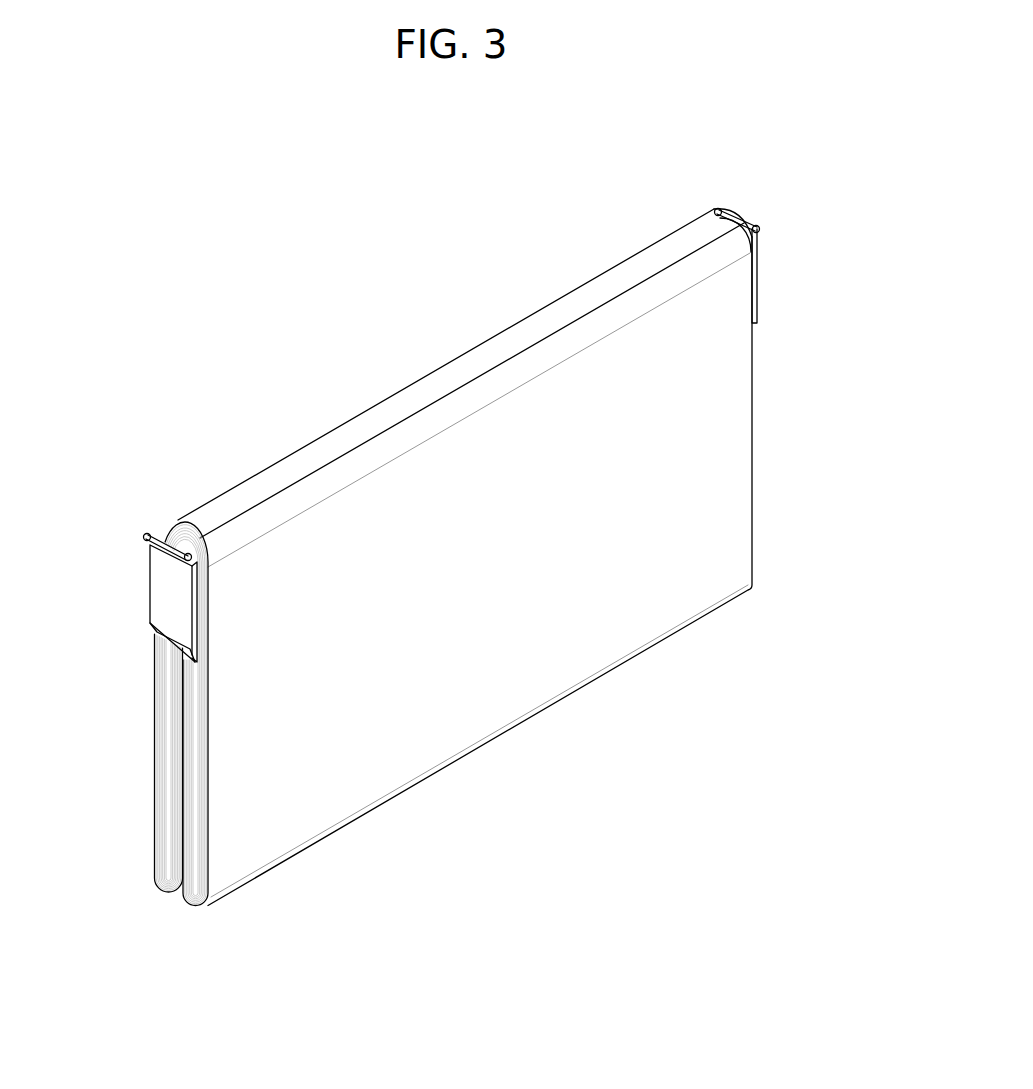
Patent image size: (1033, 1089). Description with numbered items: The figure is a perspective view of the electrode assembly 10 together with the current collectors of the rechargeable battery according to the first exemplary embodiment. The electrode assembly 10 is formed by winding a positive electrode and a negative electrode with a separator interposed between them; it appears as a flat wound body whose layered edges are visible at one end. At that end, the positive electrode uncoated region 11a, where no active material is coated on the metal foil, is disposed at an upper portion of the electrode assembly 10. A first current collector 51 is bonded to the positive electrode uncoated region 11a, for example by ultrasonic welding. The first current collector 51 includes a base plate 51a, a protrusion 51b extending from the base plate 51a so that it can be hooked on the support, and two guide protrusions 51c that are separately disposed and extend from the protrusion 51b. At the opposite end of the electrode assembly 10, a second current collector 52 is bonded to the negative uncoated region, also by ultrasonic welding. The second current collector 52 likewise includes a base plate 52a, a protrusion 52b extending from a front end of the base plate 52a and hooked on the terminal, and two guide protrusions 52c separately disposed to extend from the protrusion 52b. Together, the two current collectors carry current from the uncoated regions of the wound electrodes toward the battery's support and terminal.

The electrode assembly 10 is at (370, 412).
The positive electrode uncoated region 11a is at (190, 657).
The first current collector 51 is at (123, 550).
The base plate 51a is at (163, 612).
The protrusion 51b is at (147, 546).
The guide protrusions 51c is at (187, 553).
The second current collector 52 is at (782, 232).
The base plate 52a is at (758, 305).
The protrusion 52b is at (740, 220).
The guide protrusions 52c is at (722, 208).